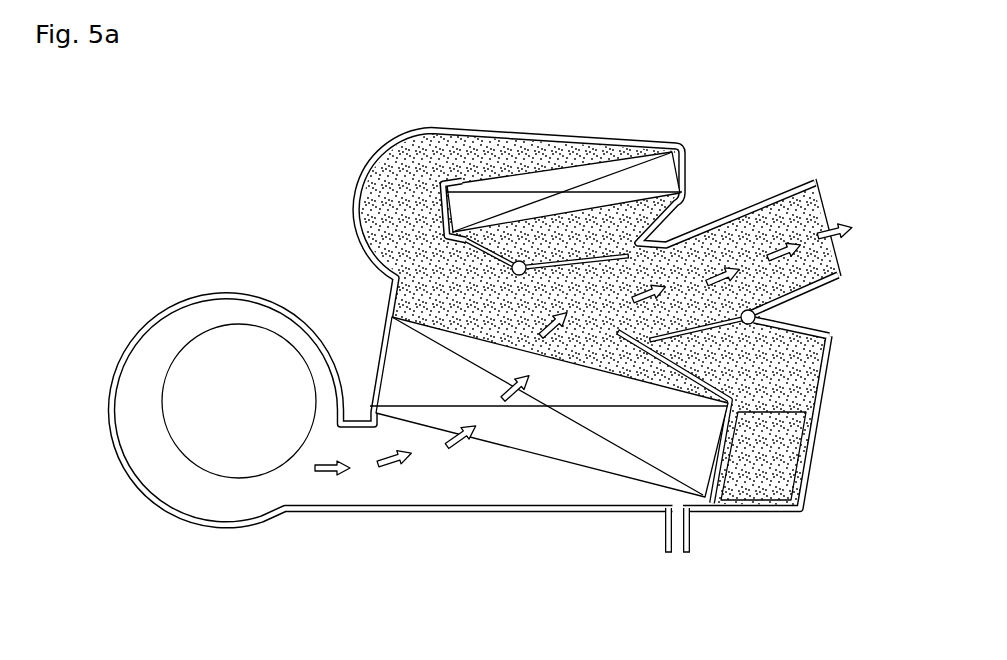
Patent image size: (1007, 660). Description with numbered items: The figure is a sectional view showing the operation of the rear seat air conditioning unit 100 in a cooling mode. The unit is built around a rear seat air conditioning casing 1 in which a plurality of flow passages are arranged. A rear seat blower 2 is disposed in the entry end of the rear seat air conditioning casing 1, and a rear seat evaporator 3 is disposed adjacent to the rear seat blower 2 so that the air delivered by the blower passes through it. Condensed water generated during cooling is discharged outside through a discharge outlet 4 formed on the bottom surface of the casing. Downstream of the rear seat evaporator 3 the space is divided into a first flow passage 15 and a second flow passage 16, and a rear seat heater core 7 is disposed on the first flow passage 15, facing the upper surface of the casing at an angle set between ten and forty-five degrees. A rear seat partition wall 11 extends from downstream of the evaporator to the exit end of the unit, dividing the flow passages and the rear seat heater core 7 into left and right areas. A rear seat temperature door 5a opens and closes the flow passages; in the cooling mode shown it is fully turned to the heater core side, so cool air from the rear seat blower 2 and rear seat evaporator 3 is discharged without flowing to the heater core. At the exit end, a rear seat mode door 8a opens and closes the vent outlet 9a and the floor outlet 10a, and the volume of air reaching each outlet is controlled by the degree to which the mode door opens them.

The rear seat air conditioning casing 1 is at (137, 485).
The rear seat blower 2 is at (230, 477).
The rear seat evaporator 3 is at (607, 463).
The discharge outlet 4 is at (677, 552).
The rear seat temperature door 5a is at (543, 272).
The rear seat heater core 7 is at (613, 160).
The rear seat mode door 8a is at (697, 335).
The vent outlet 9a is at (795, 226).
The floor outlet 10a is at (757, 412).
The rear seat partition wall 11 is at (410, 167).
The first flow passage 15 is at (408, 222).
The second flow passage 16 is at (616, 307).
The rear seat air conditioning unit 100 is at (213, 180).